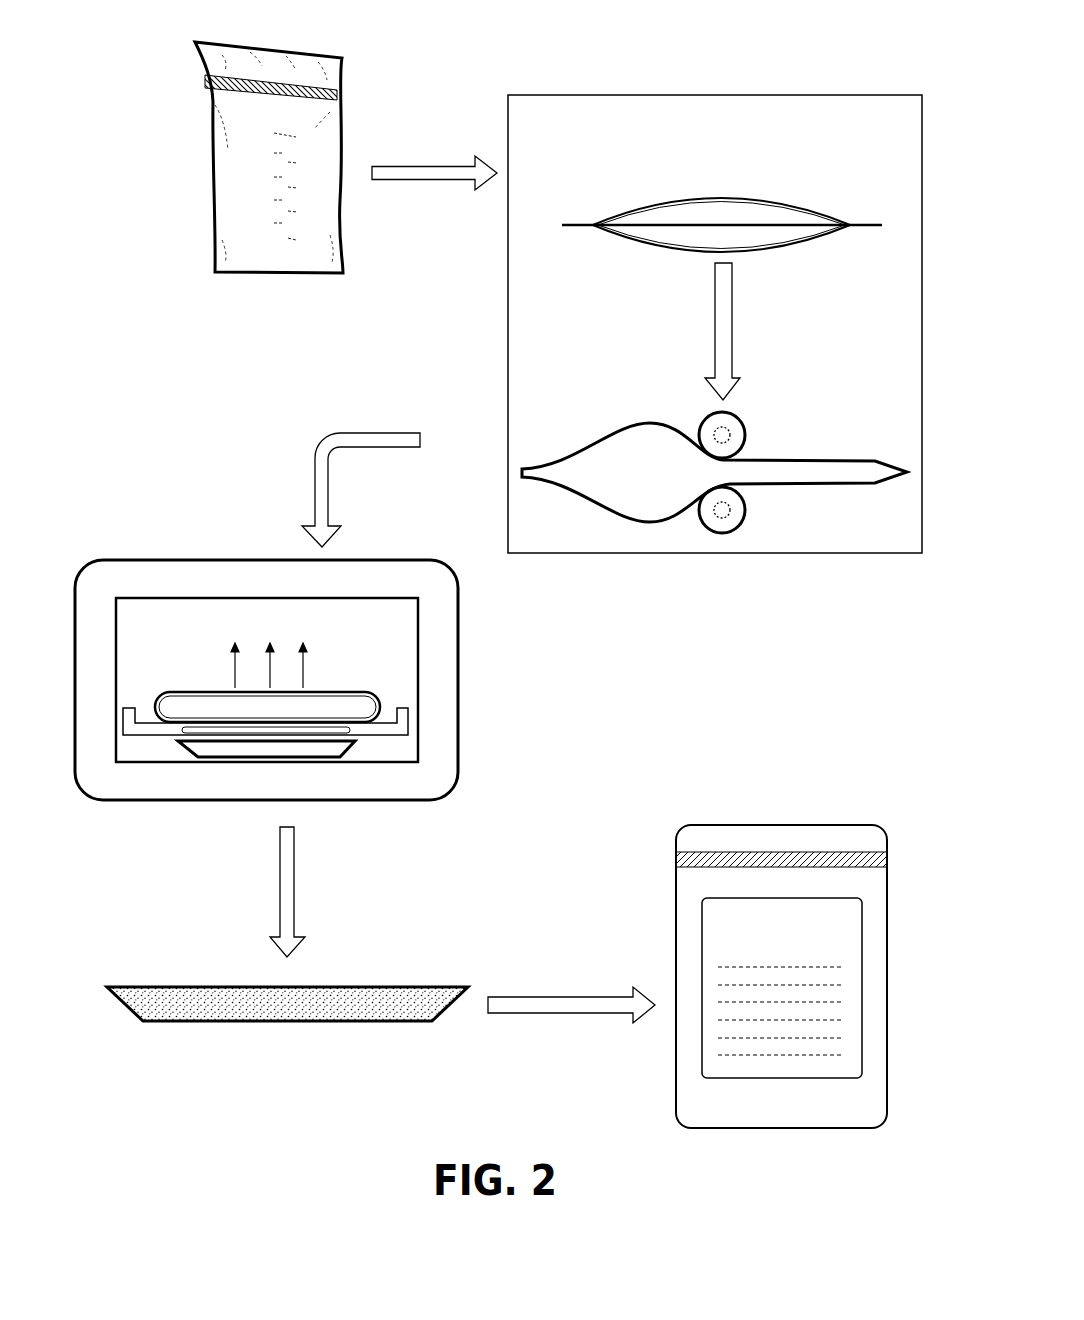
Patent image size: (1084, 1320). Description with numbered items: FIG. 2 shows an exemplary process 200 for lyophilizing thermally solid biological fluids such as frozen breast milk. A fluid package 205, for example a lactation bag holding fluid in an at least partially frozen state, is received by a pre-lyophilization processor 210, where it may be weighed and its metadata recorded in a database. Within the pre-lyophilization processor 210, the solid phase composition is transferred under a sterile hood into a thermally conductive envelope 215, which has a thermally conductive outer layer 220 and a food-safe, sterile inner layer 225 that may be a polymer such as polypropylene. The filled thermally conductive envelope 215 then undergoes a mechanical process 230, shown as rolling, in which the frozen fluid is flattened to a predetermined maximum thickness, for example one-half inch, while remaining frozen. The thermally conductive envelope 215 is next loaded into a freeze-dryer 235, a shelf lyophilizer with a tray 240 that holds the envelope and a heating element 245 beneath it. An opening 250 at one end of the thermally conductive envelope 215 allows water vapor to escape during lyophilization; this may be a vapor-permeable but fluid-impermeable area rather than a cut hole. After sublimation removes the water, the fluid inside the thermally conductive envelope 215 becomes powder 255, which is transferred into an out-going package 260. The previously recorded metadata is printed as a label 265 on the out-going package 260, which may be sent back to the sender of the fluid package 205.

The process 200 is at (190, 110).
The fluid package 205 is at (348, 133).
The pre-lyophilization processor 210 is at (860, 141).
The thermally conductive envelope 215 is at (763, 200).
The outer layer 220 is at (773, 250).
The inner layer 225 is at (608, 230).
The mechanical process 230 is at (578, 432).
The freeze-dryer 235 is at (420, 677).
The tray 240 is at (395, 732).
The heating element 245 is at (210, 750).
The opening 250 is at (356, 700).
The powder 255 is at (392, 1007).
The out-going package 260 is at (750, 823).
The label 265 is at (769, 946).